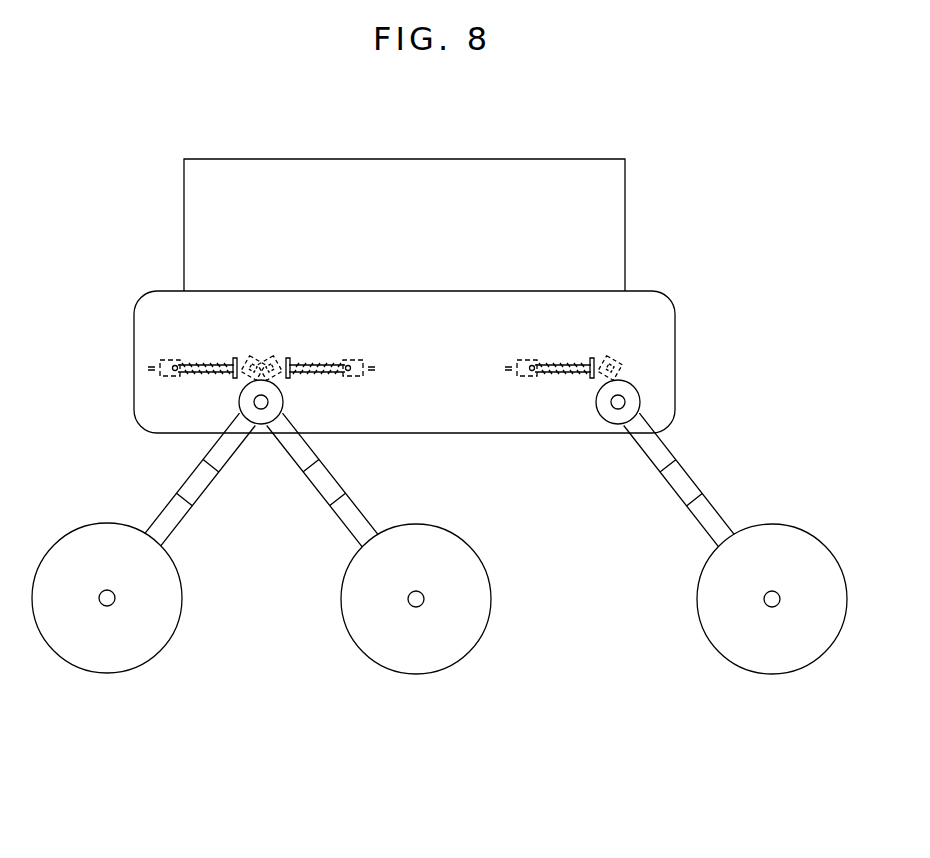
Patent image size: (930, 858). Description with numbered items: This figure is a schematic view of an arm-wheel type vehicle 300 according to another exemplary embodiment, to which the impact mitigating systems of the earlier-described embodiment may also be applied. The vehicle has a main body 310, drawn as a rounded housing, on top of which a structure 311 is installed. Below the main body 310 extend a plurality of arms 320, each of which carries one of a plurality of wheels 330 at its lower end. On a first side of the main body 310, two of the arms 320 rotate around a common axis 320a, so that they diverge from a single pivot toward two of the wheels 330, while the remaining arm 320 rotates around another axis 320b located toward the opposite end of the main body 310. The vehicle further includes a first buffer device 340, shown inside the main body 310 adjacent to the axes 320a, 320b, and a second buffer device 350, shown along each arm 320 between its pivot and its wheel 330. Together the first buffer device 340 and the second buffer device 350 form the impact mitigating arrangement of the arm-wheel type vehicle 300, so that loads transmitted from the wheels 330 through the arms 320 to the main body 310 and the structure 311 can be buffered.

The arm-wheel type vehicle 300 is at (526, 117).
The main body 310 is at (135, 340).
The structure 311 is at (193, 199).
The arm 320 is at (163, 510).
The axis 320a is at (261, 405).
The axis 320b is at (623, 403).
The wheel 330 is at (112, 665).
The first buffer device 340 is at (307, 357).
The second buffer device 350 is at (185, 477).